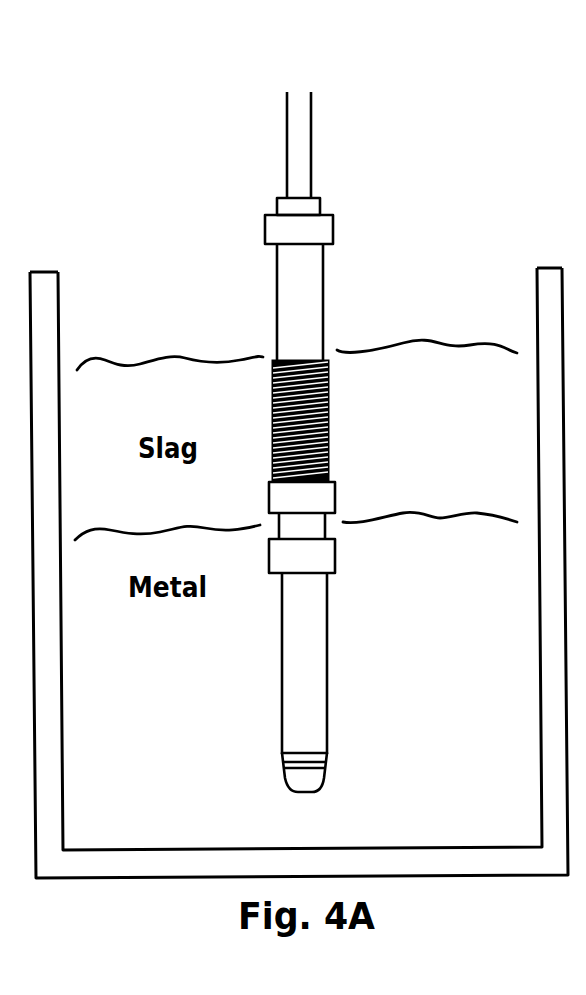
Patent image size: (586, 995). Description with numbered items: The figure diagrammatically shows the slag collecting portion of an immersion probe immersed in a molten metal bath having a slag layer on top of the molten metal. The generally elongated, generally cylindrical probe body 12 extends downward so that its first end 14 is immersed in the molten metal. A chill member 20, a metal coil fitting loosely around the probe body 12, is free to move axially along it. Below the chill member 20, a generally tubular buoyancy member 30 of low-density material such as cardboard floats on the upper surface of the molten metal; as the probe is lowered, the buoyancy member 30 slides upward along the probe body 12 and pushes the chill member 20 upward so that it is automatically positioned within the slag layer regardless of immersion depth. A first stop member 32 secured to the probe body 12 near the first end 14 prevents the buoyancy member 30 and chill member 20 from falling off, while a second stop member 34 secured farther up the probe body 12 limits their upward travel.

The probe body 12 is at (314, 306).
The first end 14 is at (316, 778).
The chill member 20 is at (330, 420).
The buoyancy member 30 is at (335, 490).
The first stop member 32 is at (335, 552).
The second stop member 34 is at (330, 217).